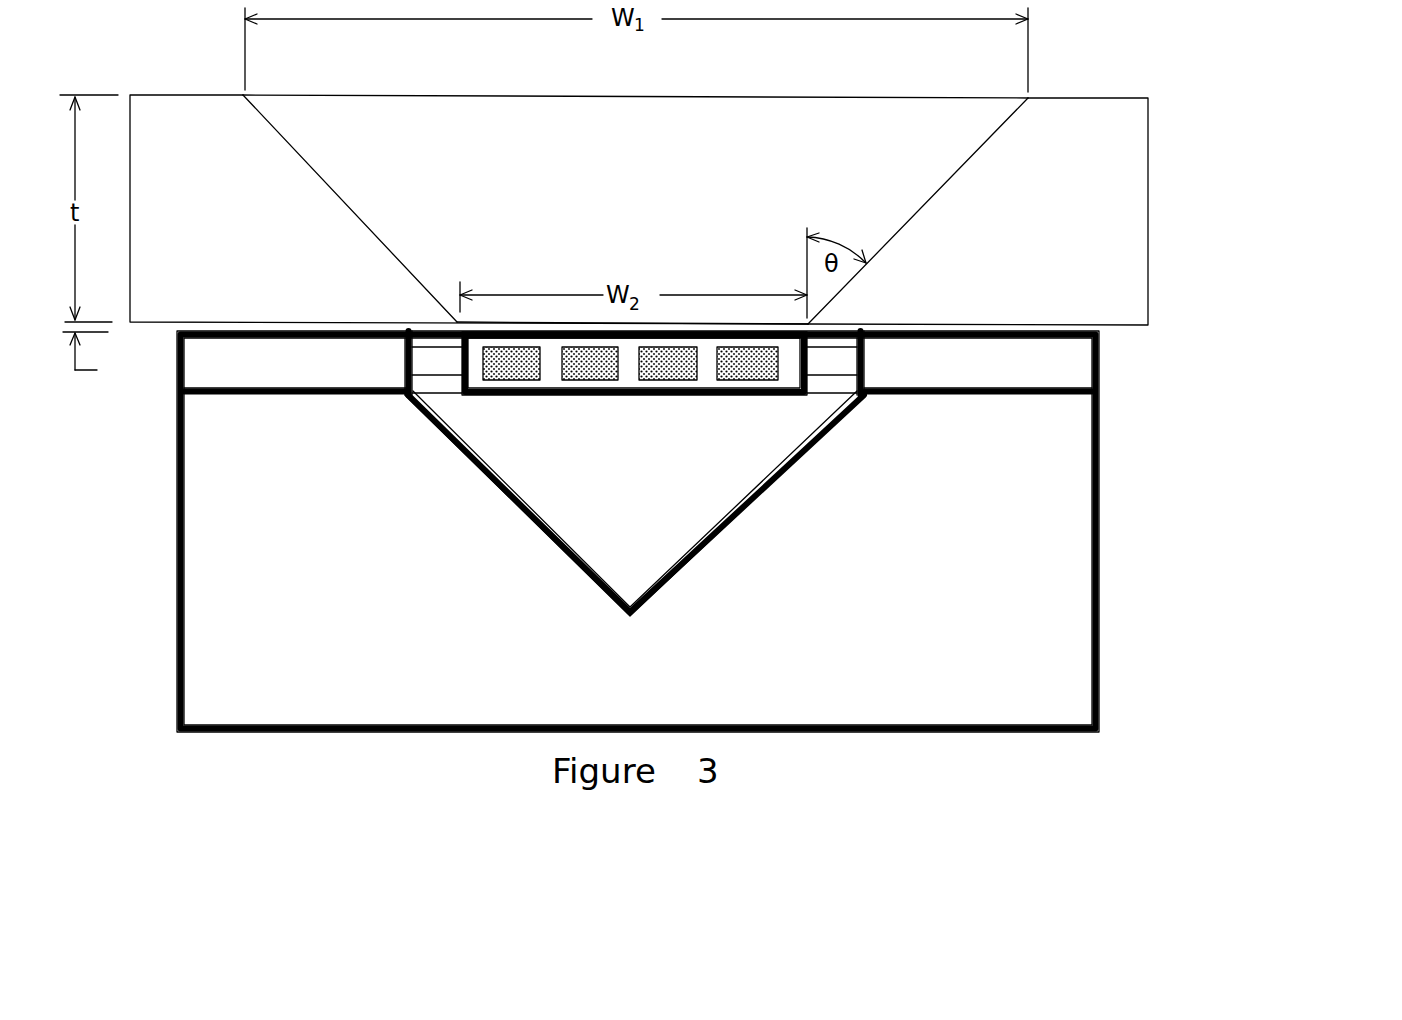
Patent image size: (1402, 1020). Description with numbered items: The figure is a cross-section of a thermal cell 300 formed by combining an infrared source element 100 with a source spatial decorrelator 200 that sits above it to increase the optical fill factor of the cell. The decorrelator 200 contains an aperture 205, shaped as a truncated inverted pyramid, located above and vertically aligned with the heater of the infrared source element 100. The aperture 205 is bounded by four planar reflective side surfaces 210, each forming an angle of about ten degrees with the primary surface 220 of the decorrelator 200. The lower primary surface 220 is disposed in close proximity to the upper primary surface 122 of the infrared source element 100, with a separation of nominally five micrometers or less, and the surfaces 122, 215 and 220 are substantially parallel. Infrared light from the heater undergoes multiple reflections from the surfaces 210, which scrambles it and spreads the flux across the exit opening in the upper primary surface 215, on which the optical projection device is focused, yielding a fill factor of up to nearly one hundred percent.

The infrared source element 100 is at (1114, 475).
The primary surface of the infrared source element 122 is at (192, 330).
The source spatial decorrelator 200 is at (1158, 219).
The aperture 205 is at (745, 145).
The reflective side surfaces 210 is at (312, 167).
The primary surface of the decorrelator 215 is at (1085, 97).
The primary surface of the decorrelator 220 is at (1125, 328).
The thermal cell 300 is at (1310, 177).